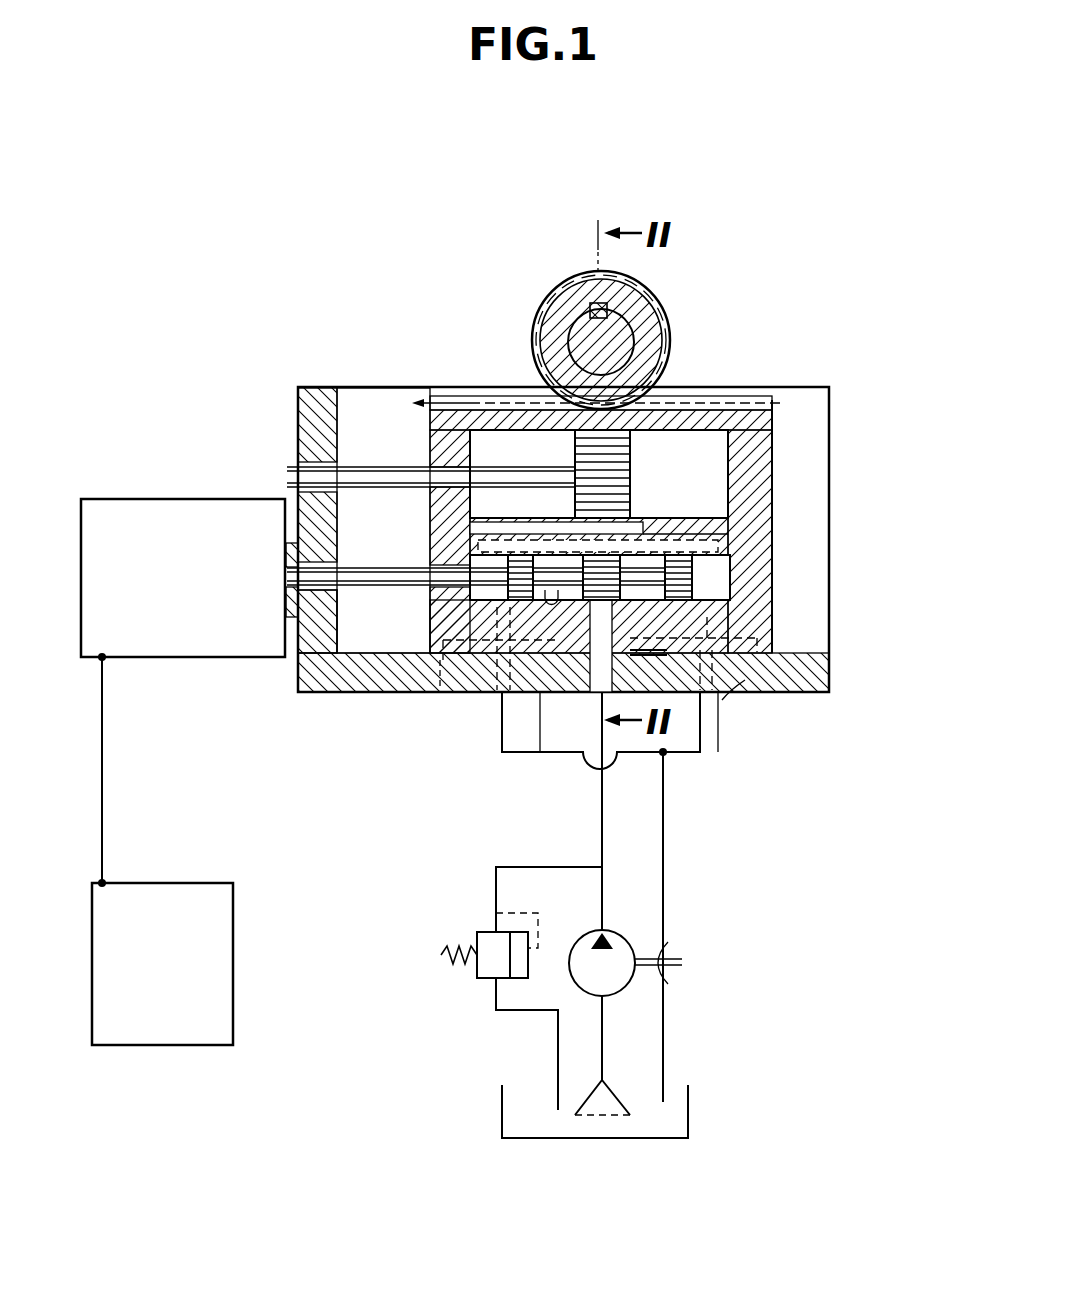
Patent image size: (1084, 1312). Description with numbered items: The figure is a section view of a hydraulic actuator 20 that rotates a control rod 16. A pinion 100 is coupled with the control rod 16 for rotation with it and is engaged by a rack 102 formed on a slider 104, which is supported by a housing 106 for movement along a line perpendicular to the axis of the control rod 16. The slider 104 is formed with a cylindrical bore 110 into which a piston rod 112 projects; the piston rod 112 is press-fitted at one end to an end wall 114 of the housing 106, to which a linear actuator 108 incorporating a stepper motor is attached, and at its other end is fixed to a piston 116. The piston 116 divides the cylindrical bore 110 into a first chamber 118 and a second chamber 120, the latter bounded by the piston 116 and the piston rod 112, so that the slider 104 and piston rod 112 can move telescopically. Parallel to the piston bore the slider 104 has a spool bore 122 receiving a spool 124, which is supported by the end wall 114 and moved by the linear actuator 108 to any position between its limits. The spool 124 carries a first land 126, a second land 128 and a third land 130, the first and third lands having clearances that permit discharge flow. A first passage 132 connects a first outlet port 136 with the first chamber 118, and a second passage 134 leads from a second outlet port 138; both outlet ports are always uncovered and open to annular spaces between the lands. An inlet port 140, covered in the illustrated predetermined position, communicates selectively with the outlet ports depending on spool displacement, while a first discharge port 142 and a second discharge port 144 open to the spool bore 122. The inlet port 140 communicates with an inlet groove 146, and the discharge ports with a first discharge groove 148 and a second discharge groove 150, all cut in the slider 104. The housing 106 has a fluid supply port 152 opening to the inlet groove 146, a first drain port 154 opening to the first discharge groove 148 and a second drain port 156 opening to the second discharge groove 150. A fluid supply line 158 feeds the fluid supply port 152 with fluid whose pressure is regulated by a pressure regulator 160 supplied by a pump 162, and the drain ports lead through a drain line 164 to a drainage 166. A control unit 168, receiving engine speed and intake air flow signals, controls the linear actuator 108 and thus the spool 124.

The control rod 16 is at (622, 330).
The actuator 20 is at (845, 395).
The pinion 100 is at (578, 292).
The rack 102 is at (738, 425).
The slider 104 is at (773, 450).
The housing 106 is at (802, 662).
The linear actuator 108 is at (165, 505).
The cylindrical bore 110 is at (713, 440).
The piston rod 112 is at (385, 468).
The end wall 114 is at (316, 400).
The piston 116 is at (630, 480).
The first chamber 118 is at (668, 448).
The second chamber 120 is at (511, 440).
The spool bore 122 is at (486, 695).
The spool 124 is at (318, 694).
The first land 126 is at (596, 533).
The second land 128 is at (584, 705).
The third land 130 is at (393, 660).
The first passage 132 is at (732, 523).
The second passage 134 is at (515, 550).
The first outlet port 136 is at (500, 557).
The second outlet port 138 is at (776, 667).
The inlet port 140 is at (575, 700).
The first discharge port 142 is at (462, 700).
The second discharge port 144 is at (742, 626).
The inlet groove 146 is at (745, 683).
The first discharge groove 148 is at (442, 690).
The second discharge groove 150 is at (762, 650).
The fluid supply port 152 is at (698, 752).
The first drain port 154 is at (546, 700).
The second drain port 156 is at (722, 700).
The fluid supply line 158 is at (603, 838).
The pressure regulator 160 is at (492, 940).
The pump 162 is at (655, 935).
The drain line 164 is at (665, 1040).
The drainage 166 is at (690, 1110).
The control unit 168 is at (212, 900).